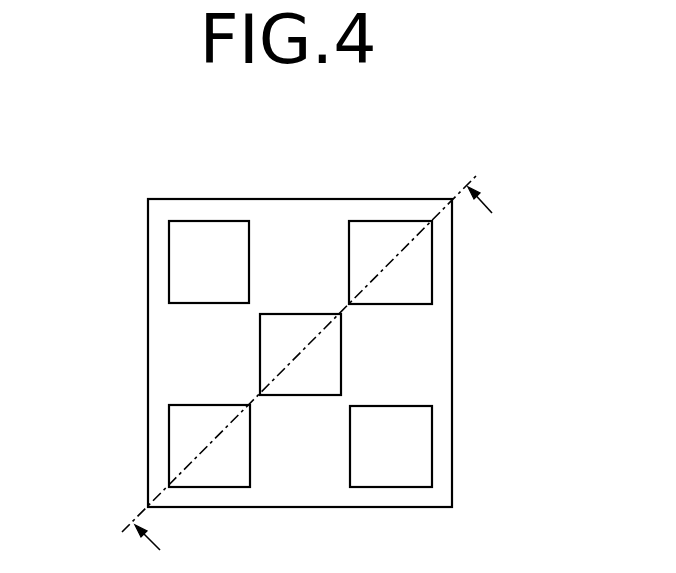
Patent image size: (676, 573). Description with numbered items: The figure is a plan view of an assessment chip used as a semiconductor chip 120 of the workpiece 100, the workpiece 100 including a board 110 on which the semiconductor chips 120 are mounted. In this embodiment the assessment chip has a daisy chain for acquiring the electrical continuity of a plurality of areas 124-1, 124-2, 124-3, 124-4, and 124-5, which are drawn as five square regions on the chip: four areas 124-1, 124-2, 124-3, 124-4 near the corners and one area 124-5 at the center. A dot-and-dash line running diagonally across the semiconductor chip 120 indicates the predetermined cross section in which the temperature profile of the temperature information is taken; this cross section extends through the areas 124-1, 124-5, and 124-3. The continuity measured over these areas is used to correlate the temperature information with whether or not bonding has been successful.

The workpiece 100 is at (382, 133).
The board 110 is at (354, 190).
The semiconductor chip 120 is at (293, 222).
The area 124-1 is at (185, 440).
The area 124-2 is at (420, 442).
The area 124-3 is at (418, 258).
The area 124-4 is at (182, 258).
The area 124-5 is at (270, 352).